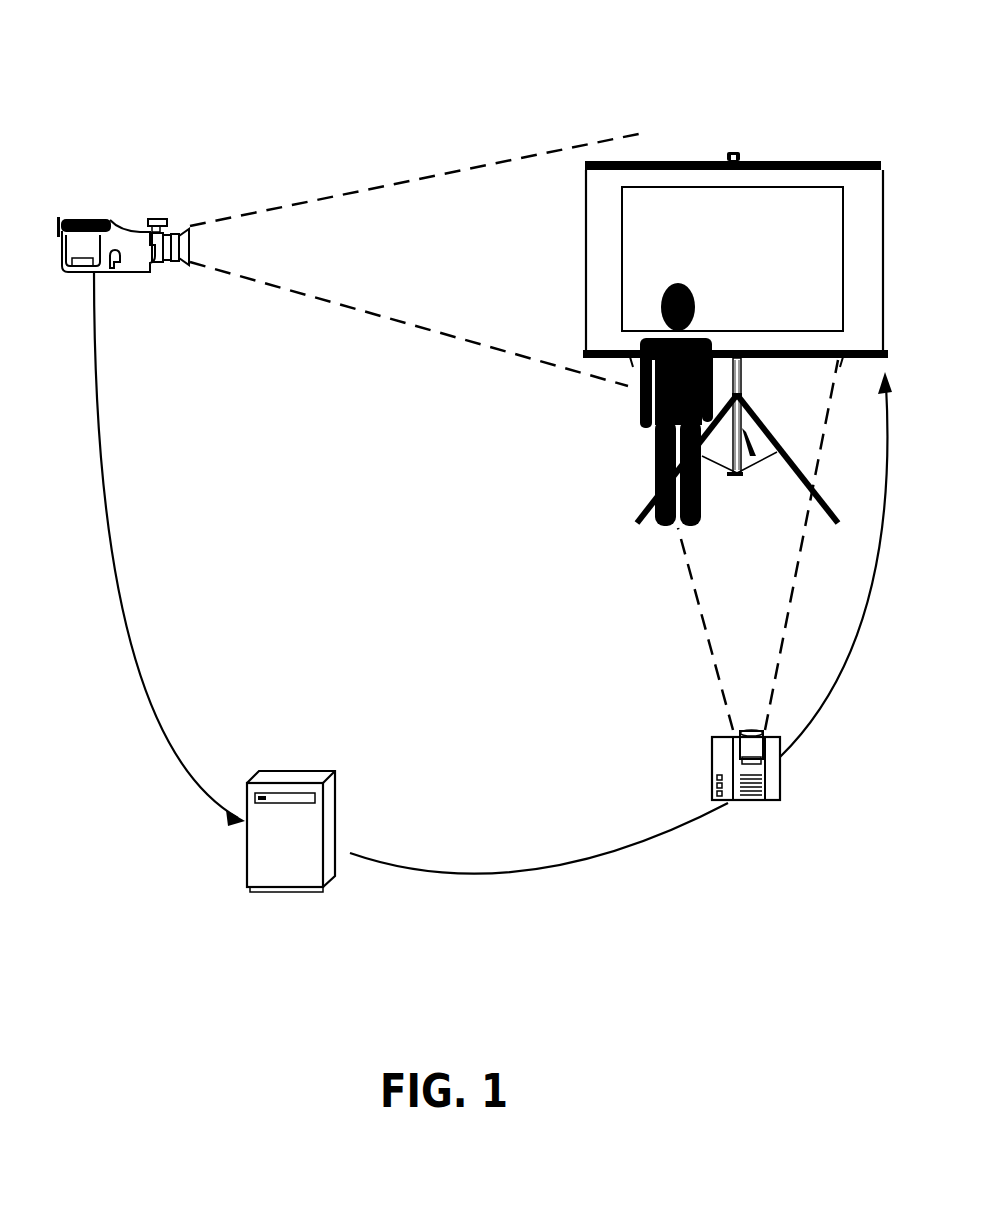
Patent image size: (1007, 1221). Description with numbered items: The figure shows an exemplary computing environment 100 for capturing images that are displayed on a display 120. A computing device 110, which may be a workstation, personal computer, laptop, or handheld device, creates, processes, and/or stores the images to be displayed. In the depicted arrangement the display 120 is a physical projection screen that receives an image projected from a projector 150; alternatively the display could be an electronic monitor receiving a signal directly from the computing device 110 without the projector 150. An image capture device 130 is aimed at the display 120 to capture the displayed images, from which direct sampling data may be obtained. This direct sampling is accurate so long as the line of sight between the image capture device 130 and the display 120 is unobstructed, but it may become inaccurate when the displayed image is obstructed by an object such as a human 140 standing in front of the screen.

The computing environment 100 is at (232, 54).
The computing device 110 is at (290, 770).
The display 120 is at (802, 162).
The image capture device 130 is at (83, 216).
The human 140 is at (655, 460).
The projector 150 is at (712, 738).